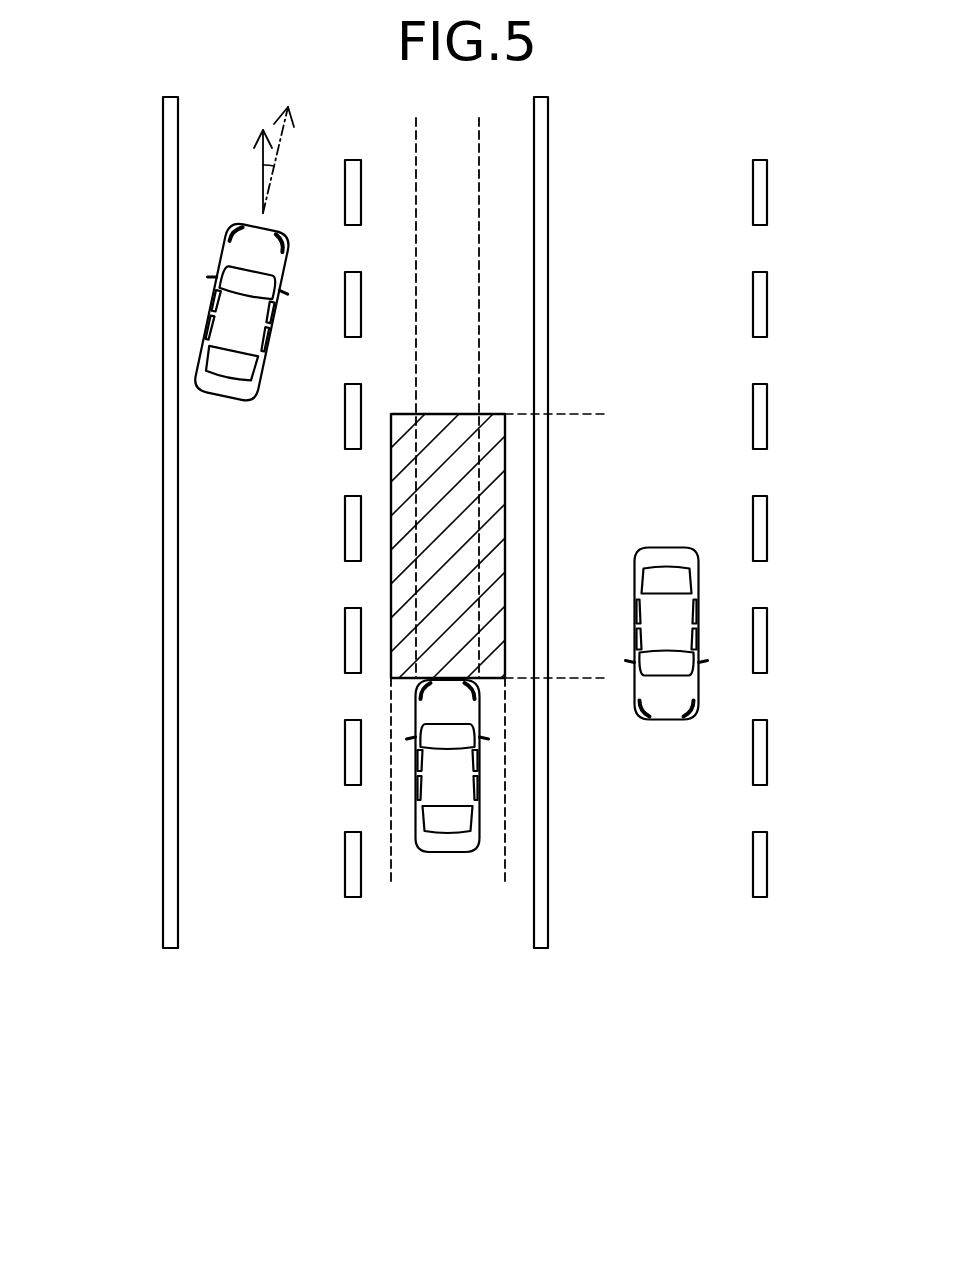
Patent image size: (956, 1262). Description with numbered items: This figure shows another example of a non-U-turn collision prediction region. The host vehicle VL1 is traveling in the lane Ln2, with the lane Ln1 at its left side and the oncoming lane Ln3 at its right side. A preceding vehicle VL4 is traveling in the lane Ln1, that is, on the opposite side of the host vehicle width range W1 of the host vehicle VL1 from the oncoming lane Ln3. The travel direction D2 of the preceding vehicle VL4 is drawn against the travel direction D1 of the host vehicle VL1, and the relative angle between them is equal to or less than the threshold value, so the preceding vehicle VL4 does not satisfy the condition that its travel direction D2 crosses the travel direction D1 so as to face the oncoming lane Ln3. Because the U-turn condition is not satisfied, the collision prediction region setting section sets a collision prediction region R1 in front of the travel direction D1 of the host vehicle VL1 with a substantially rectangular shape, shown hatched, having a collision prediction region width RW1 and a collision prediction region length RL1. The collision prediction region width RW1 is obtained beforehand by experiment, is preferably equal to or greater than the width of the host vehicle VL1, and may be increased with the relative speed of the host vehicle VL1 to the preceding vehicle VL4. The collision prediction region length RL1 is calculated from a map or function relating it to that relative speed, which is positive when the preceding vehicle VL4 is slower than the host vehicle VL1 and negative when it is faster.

The preceding vehicle VL4 is at (210, 312).
The host vehicle VL1 is at (417, 767).
The collision prediction region R1 is at (390, 589).
The lane Ln1 is at (278, 1000).
The lane Ln2 is at (445, 1000).
The oncoming lane Ln3 is at (612, 1000).
The host vehicle width range W1 is at (479, 138).
The collision prediction region length RL1 is at (573, 414).
The collision prediction region width RW1 is at (391, 870).
The travel direction D1 is at (244, 171).
The travel direction D2 is at (299, 160).